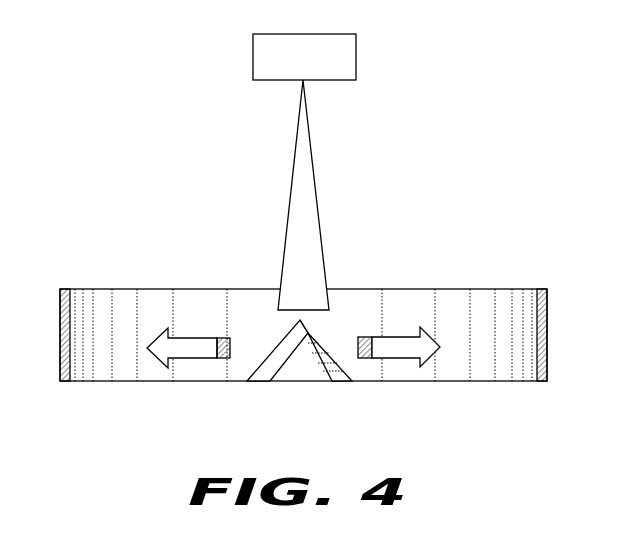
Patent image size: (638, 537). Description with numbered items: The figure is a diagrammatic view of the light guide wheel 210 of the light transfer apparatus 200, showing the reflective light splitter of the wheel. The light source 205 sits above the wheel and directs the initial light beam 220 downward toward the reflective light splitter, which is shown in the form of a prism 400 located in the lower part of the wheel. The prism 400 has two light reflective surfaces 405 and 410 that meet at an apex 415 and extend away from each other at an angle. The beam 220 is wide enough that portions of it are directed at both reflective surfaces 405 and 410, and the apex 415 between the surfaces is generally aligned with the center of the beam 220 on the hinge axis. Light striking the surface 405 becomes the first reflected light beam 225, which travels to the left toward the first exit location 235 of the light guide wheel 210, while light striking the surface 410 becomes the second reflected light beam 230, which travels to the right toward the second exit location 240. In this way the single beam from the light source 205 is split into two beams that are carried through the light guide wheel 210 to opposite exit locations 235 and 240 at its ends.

The light transfer apparatus 200 is at (532, 103).
The light source 205 is at (357, 57).
The light guide wheel 210 is at (487, 289).
The initial light beam 220 is at (320, 208).
The first reflected light beam 225 is at (188, 338).
The second reflected light beam 230 is at (405, 337).
The first exit location 235 is at (60, 305).
The second exit location 240 is at (547, 310).
The prism 400 is at (301, 334).
The light reflective surface 405 is at (272, 368).
The light reflective surface 410 is at (347, 368).
The apex 415 is at (300, 320).